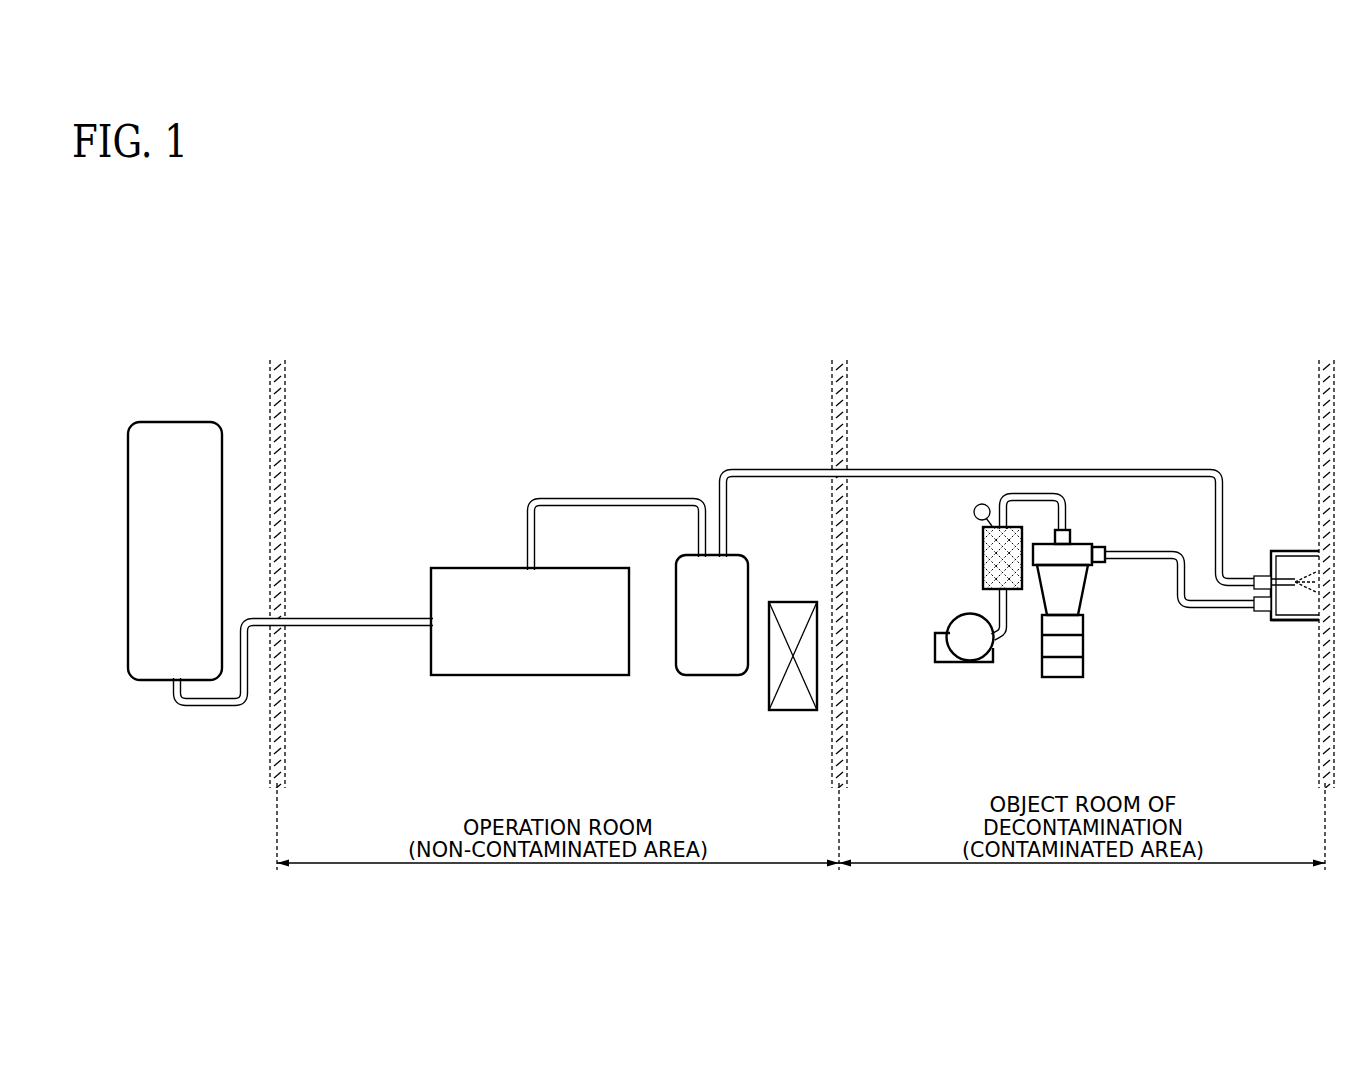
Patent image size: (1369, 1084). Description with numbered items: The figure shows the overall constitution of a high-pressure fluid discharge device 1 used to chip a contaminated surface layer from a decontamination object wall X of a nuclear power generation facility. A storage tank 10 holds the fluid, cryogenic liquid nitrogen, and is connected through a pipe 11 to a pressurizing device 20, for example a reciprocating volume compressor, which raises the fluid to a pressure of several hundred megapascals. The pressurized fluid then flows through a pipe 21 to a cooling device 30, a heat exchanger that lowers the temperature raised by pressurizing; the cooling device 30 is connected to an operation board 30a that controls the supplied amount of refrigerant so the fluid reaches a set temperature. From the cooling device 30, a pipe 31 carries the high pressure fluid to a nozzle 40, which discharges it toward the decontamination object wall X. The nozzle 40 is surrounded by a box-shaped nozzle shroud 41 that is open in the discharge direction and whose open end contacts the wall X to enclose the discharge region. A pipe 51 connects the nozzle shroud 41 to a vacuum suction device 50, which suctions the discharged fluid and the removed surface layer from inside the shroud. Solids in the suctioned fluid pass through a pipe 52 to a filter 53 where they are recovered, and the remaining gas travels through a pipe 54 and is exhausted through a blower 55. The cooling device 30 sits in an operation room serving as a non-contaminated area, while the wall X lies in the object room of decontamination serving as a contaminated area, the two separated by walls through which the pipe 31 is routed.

The high-pressure fluid discharge device 1 is at (1157, 305).
The storage tank 10 is at (172, 421).
The pipe 11 is at (215, 707).
The pressurizing device 20 is at (528, 677).
The pipe 21 is at (608, 500).
The cooling device 30 is at (713, 677).
The operation board 30a is at (793, 712).
The pipe 31 is at (915, 468).
The nozzle 40 is at (1290, 575).
The nozzle shroud 41 is at (1293, 623).
The vacuum suction device 50 is at (1082, 593).
The pipe 51 is at (1142, 548).
The pipe 52 is at (1067, 518).
The filter 53 is at (982, 558).
The pipe 54 is at (1012, 618).
The blower 55 is at (970, 613).
The decontamination object wall X is at (1316, 413).